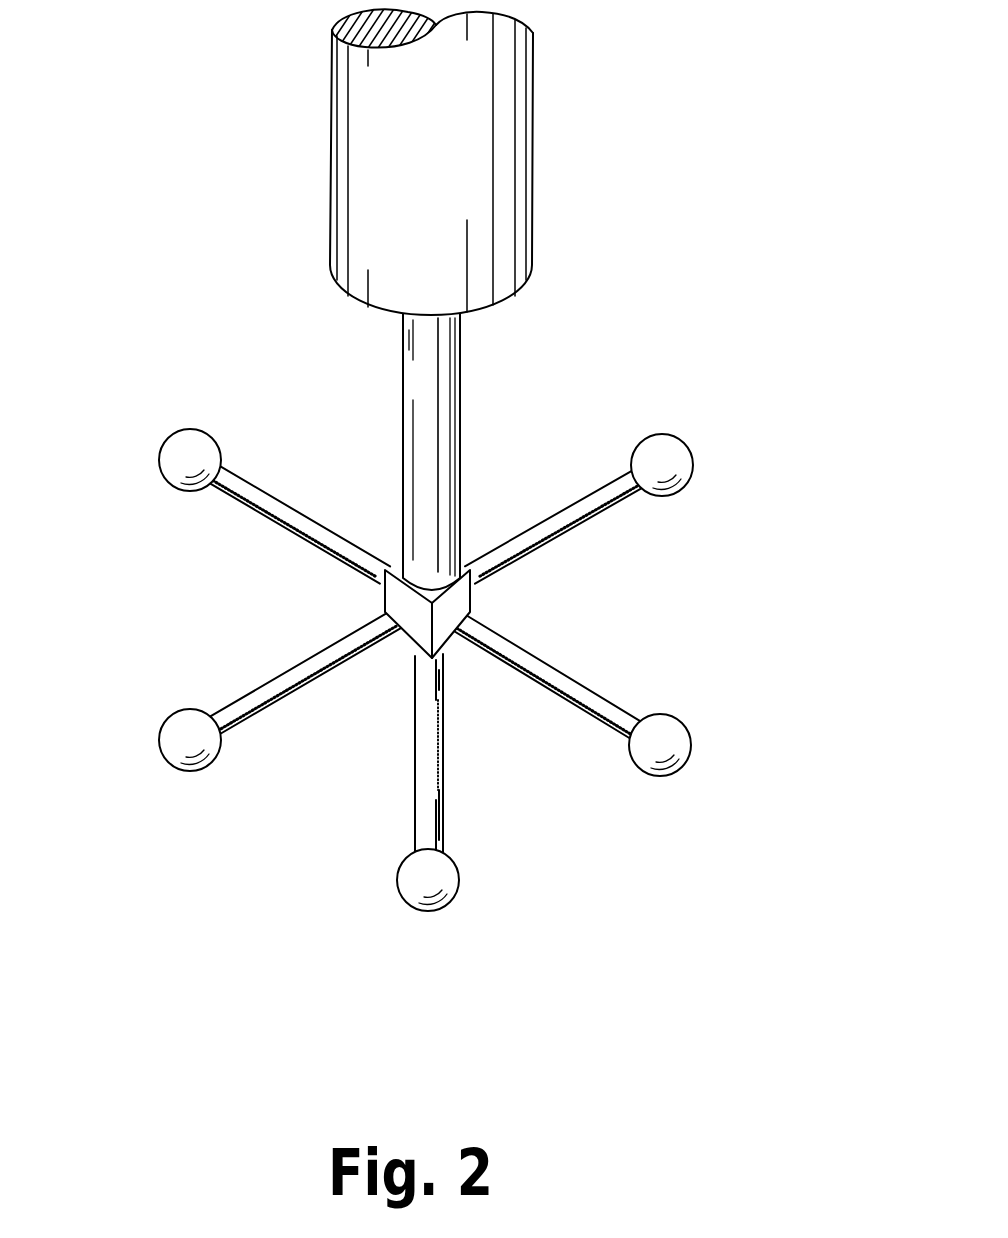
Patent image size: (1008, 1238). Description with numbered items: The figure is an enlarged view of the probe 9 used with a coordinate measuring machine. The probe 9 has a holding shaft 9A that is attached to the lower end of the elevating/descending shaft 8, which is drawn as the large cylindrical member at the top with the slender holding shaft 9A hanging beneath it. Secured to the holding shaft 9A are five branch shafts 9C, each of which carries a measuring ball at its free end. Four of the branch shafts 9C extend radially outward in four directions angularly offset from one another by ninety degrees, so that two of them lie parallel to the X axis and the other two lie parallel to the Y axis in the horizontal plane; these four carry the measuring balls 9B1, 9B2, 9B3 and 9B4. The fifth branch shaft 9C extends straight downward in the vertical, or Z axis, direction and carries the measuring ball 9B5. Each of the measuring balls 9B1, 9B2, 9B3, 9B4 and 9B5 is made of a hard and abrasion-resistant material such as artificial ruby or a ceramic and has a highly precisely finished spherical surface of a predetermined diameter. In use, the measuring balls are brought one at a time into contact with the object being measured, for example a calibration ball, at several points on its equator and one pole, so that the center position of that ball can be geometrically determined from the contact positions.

The elevating/descending shaft 8 is at (533, 178).
The probe 9 is at (685, 600).
The holding shaft 9A is at (459, 420).
The measuring ball 9B1 is at (688, 443).
The measuring ball 9B2 is at (690, 747).
The measuring ball 9B3 is at (177, 740).
The measuring ball 9B4 is at (177, 440).
The measuring ball 9B5 is at (403, 877).
The branch shaft 9C is at (293, 510).